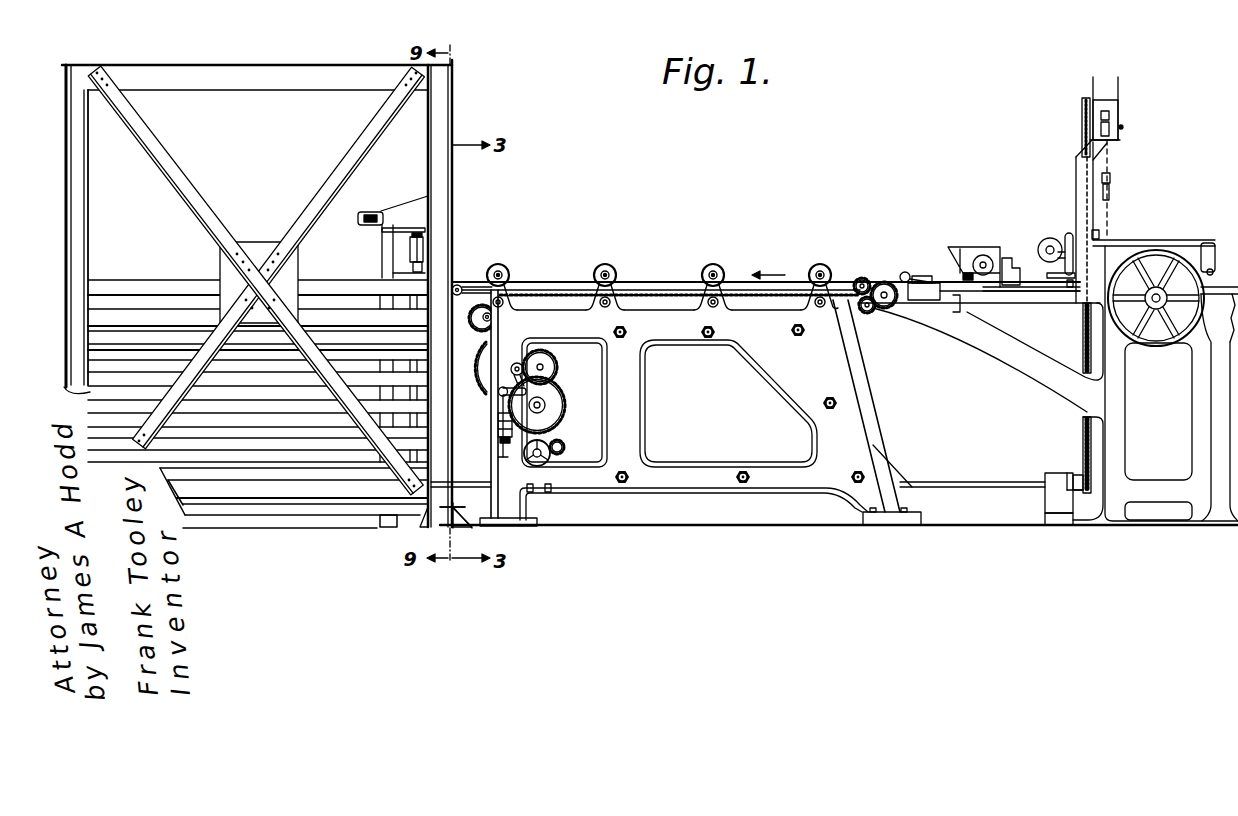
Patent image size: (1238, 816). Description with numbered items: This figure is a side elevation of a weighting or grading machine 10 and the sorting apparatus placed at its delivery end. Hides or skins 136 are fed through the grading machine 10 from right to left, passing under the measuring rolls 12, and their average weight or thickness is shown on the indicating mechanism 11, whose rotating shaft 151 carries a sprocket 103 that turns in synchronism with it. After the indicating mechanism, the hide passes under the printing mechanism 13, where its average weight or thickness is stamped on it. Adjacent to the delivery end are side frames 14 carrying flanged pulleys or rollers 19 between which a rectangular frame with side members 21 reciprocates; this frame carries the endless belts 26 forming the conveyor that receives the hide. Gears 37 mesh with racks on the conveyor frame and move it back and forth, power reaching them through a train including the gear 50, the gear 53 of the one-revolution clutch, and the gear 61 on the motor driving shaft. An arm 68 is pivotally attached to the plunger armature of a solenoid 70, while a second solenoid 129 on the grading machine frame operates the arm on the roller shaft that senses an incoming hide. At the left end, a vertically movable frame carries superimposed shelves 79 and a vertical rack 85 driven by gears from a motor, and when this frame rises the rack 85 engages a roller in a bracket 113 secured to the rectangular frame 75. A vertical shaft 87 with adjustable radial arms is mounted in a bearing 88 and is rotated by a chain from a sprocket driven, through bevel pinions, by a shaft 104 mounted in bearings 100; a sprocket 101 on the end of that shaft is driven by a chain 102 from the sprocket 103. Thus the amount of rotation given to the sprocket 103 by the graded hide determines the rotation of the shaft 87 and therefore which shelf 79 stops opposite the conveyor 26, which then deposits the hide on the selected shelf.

The weighting or grading machine 10 is at (1165, 380).
The indicating mechanism 11 is at (1113, 117).
The measuring rolls 12 is at (1044, 242).
The printing mechanism 13 is at (977, 245).
The side frames 14 is at (838, 378).
The flanged pulleys or rollers 19 is at (506, 266).
The side members 21 is at (655, 288).
The endless belts 26 is at (681, 282).
The gears 37 is at (482, 324).
The gear 50 is at (548, 366).
The gear 53 is at (558, 417).
The gear 61 is at (558, 455).
The arm 68 is at (512, 362).
The solenoid 70 is at (497, 420).
The rectangular frame 75 is at (339, 68).
The shelves 79 is at (242, 380).
The rack 85 is at (383, 263).
The shaft 87 is at (420, 363).
The bearing 88 is at (422, 248).
The bearings 100 is at (1052, 500).
The sprocket 101 is at (1082, 477).
The chain 102 is at (1080, 420).
The sprocket 103 is at (1083, 100).
The shaft 104 is at (937, 482).
The bracket 113 is at (395, 210).
The solenoid 129 is at (940, 292).
The hides or skins 136 is at (1230, 280).
The shaft 151 is at (1118, 119).